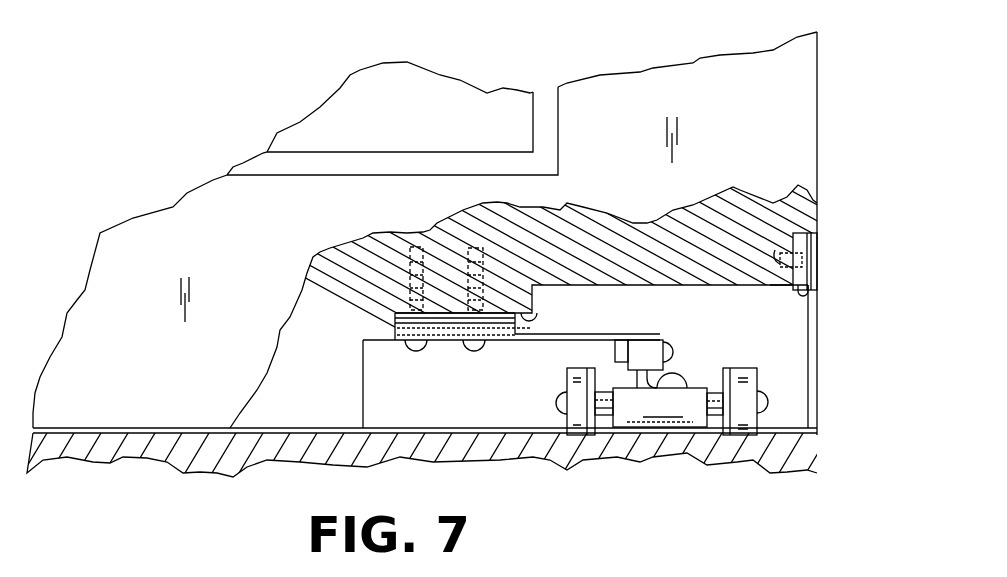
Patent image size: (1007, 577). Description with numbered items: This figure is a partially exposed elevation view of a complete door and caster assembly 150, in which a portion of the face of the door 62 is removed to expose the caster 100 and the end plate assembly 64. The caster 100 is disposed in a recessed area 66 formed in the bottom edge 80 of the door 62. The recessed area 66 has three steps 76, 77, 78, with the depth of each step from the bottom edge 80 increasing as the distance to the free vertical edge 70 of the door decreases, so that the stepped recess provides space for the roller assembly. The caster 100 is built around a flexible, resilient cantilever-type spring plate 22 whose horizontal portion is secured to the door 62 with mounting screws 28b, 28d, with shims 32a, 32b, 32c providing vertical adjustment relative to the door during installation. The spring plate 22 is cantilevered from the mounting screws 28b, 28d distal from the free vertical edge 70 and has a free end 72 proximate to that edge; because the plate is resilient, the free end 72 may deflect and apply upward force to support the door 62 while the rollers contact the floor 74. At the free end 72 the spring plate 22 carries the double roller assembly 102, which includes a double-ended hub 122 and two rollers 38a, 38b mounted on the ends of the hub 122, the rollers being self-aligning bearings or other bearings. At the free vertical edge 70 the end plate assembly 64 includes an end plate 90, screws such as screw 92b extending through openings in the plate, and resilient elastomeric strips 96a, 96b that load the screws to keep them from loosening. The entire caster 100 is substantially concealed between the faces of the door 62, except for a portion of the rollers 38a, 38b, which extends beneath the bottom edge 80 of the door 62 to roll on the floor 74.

The door and caster assembly 150 is at (250, 125).
The door 62 is at (160, 233).
The free vertical edge 70 is at (819, 168).
The step 76 is at (722, 292).
The mounting screw 28b is at (432, 215).
The mounting screw 28d is at (484, 257).
The shim 32a is at (395, 312).
The shim 32b is at (393, 321).
The shim 32c is at (393, 328).
The step 77 is at (530, 320).
The free end 72 is at (606, 333).
The spring plate 22 is at (544, 341).
The step 78 is at (377, 342).
The roller 38a is at (585, 437).
The roller 38b is at (750, 422).
The hub 122 is at (679, 428).
The caster 100 is at (713, 329).
The double roller assembly 102 is at (763, 378).
The end plate assembly 64 is at (820, 259).
The resilient elastomeric strip 96a is at (808, 234).
The resilient elastomeric strip 96b is at (818, 262).
The screw 92b is at (773, 250).
The end plate 90 is at (810, 357).
The recessed area 66 is at (793, 310).
The bottom edge 80 is at (305, 430).
The floor 74 is at (212, 471).